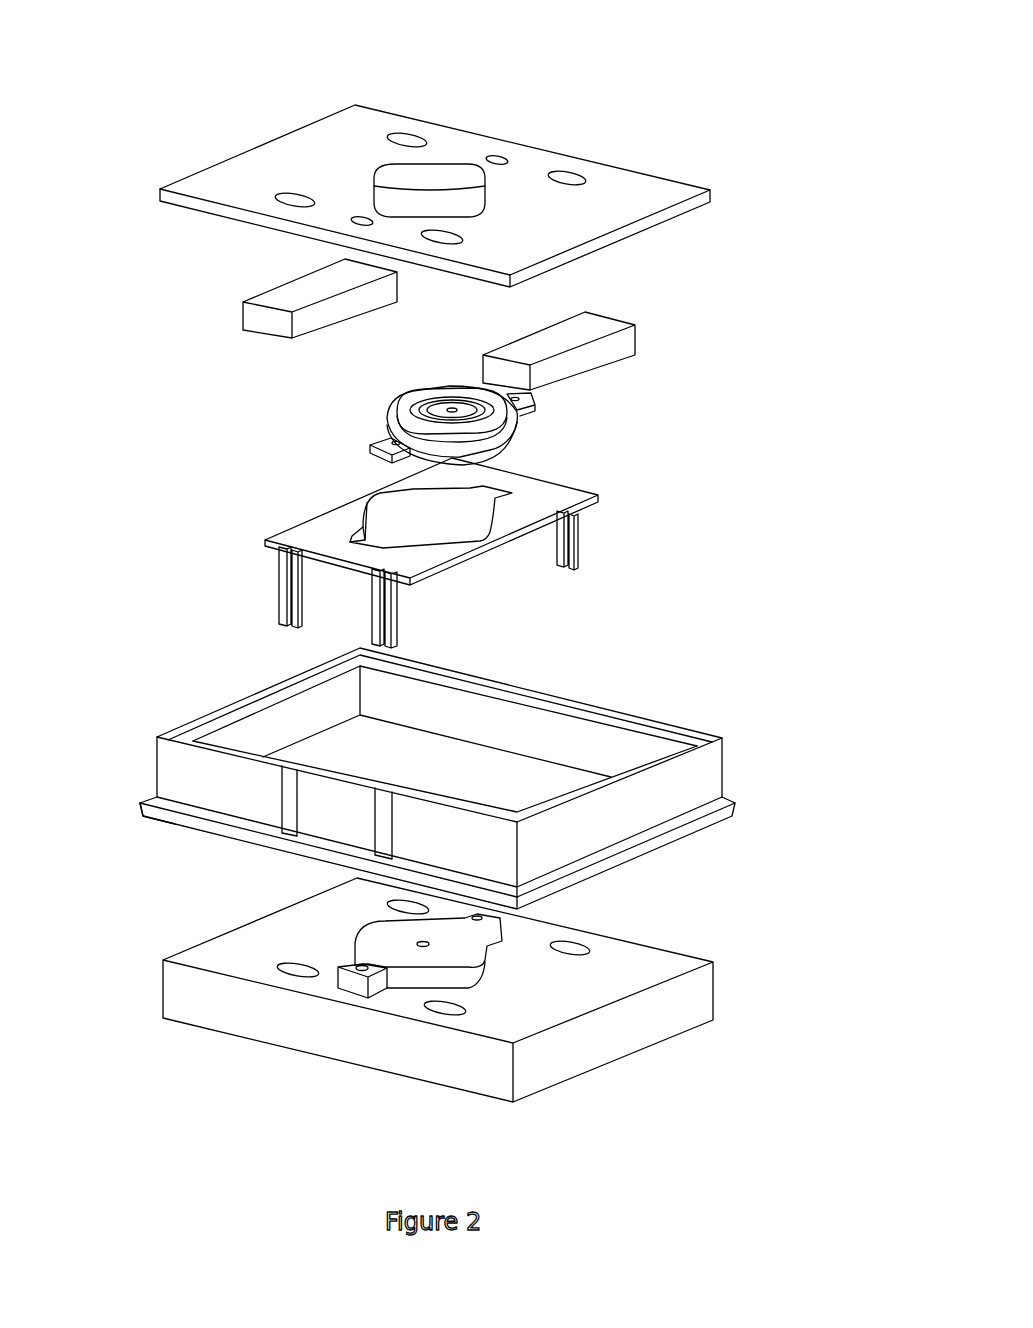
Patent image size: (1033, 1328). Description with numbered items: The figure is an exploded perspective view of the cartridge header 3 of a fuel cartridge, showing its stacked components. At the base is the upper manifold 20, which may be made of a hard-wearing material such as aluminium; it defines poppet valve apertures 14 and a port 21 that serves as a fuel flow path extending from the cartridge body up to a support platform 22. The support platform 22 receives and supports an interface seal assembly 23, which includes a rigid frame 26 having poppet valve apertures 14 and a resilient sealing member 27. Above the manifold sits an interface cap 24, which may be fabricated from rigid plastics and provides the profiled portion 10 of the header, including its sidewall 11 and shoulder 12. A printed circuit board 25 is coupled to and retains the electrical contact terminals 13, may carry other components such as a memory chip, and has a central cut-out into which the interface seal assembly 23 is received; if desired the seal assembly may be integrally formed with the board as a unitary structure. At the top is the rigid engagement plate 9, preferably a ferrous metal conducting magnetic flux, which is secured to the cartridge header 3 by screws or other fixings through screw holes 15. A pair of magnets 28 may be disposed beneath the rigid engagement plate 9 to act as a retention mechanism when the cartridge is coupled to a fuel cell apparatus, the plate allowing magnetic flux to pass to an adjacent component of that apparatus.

The cartridge header 3 is at (670, 69).
The rigid engagement plate 9 is at (632, 178).
The profiled portion 10 is at (430, 778).
The sidewall 11 is at (708, 775).
The shoulder 12 is at (650, 832).
The electrical contact terminals 13 is at (572, 537).
The poppet valve apertures 14 is at (496, 156).
The screw holes 15 is at (567, 170).
The upper manifold 20 is at (389, 998).
The port 21 is at (422, 948).
The support platform 22 is at (368, 998).
The interface seal assembly 23 is at (457, 421).
The interface cap 24 is at (158, 812).
The printed circuit board 25 is at (335, 525).
The rigid frame 26 is at (378, 438).
The resilient sealing member 27 is at (417, 405).
The magnets 28 is at (298, 292).